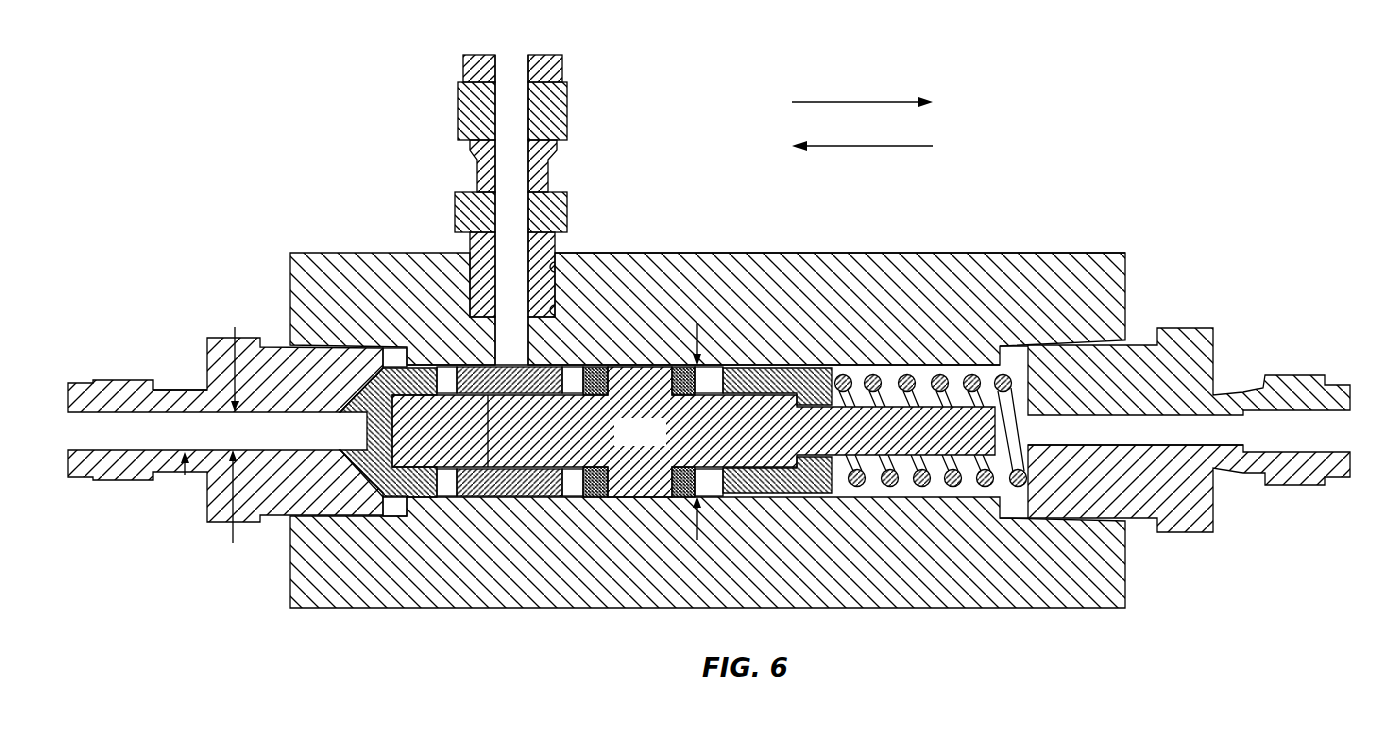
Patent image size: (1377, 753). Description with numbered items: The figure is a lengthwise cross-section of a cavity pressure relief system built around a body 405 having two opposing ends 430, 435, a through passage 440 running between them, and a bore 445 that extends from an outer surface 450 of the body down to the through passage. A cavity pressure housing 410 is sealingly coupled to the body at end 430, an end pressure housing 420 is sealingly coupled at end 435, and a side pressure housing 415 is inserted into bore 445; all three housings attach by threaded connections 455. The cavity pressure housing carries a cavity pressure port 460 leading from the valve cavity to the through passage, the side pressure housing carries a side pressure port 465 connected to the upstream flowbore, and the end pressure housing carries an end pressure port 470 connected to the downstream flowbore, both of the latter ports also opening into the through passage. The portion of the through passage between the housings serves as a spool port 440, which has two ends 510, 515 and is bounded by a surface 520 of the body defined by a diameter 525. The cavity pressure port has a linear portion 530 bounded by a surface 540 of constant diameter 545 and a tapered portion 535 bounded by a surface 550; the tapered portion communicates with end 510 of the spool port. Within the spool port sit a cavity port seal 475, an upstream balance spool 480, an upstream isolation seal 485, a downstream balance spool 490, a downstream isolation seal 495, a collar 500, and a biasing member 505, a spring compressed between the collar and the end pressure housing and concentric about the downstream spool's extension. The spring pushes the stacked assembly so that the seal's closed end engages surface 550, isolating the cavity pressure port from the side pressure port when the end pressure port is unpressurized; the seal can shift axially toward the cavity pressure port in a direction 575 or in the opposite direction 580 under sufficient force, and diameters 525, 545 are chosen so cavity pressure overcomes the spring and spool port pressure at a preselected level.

The body 405 is at (708, 423).
The cavity pressure housing 410 is at (247, 523).
The side pressure housing 415 is at (567, 212).
The end pressure housing 420 is at (1185, 532).
The end 430 is at (290, 598).
The end 435 is at (1125, 596).
The through passage 440 is at (449, 497).
The bore 445 is at (555, 267).
The outer surface 450 is at (937, 252).
The threaded connections 455 is at (1097, 522).
The cavity pressure port 460 is at (185, 470).
The side pressure port 465 is at (508, 267).
The end pressure port 470 is at (1220, 430).
The cavity port seal 475 is at (384, 493).
The upstream balance spool 480 is at (507, 497).
The upstream isolation seal 485 is at (600, 497).
The downstream balance spool 490 is at (693, 432).
The downstream isolation seal 495 is at (683, 497).
The collar 500 is at (775, 497).
The biasing member 505 is at (968, 378).
The end 510 is at (385, 363).
The end 515 is at (1020, 345).
The surface 520 is at (900, 368).
The diameter 525 is at (700, 345).
The linear portion 530 is at (298, 430).
The tapered portion 535 is at (353, 450).
The surface 540 is at (192, 400).
The diameter 545 is at (233, 543).
The surface 550 is at (353, 407).
The direction 575 is at (870, 146).
The direction 580 is at (860, 102).